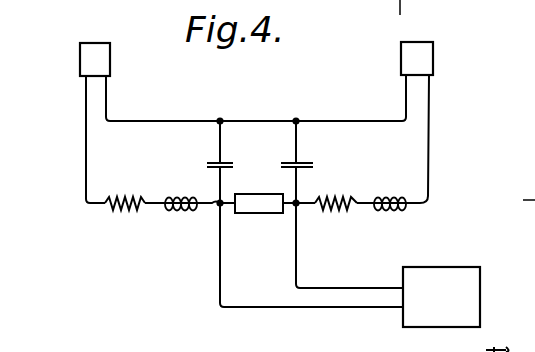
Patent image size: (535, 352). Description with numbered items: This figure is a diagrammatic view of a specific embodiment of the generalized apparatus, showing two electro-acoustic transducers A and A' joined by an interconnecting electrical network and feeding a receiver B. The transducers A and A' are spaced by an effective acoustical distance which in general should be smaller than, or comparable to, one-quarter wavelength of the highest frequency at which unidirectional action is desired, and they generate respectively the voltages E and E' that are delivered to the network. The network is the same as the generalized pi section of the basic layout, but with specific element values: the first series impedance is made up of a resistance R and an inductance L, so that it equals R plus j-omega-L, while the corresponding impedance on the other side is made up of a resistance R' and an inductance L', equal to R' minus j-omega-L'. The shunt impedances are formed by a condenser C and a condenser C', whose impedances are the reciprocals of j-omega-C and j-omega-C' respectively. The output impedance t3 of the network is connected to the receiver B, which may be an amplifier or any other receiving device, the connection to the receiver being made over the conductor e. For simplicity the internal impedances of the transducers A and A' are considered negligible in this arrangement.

The electro-acoustic transducer A is at (67, 59).
The electro-acoustic transducer A' is at (441, 58).
The voltage E is at (93, 93).
The voltage E' is at (414, 92).
The capacitance C is at (205, 163).
The capacitance C' is at (309, 161).
The resistance R is at (123, 223).
The resistance R' is at (336, 223).
The inductance L is at (181, 224).
The inductance L' is at (391, 224).
The impedance Z3 t3 is at (270, 210).
The receiver B is at (465, 296).
The conductor to source e is at (371, 298).